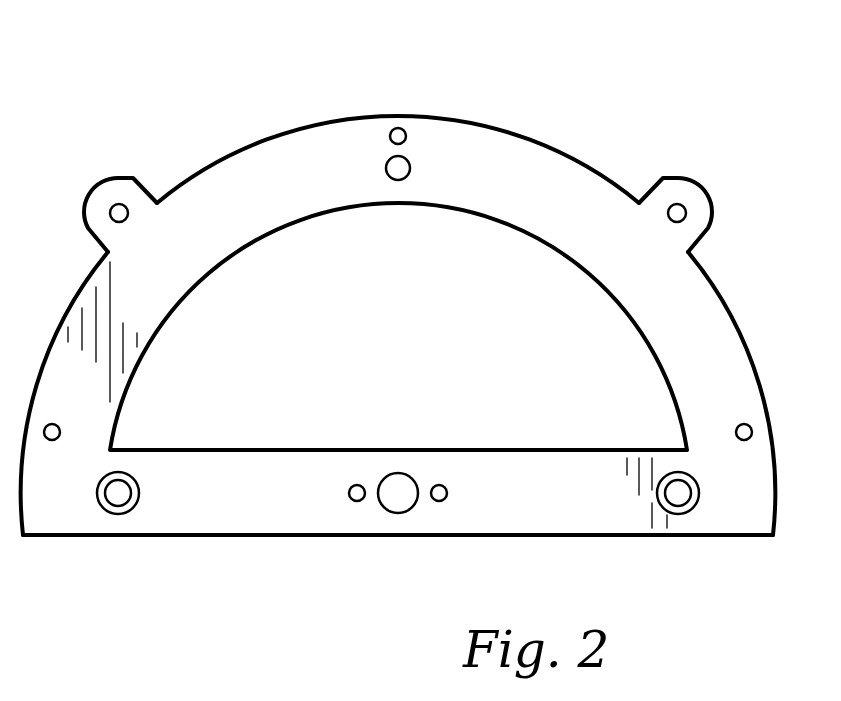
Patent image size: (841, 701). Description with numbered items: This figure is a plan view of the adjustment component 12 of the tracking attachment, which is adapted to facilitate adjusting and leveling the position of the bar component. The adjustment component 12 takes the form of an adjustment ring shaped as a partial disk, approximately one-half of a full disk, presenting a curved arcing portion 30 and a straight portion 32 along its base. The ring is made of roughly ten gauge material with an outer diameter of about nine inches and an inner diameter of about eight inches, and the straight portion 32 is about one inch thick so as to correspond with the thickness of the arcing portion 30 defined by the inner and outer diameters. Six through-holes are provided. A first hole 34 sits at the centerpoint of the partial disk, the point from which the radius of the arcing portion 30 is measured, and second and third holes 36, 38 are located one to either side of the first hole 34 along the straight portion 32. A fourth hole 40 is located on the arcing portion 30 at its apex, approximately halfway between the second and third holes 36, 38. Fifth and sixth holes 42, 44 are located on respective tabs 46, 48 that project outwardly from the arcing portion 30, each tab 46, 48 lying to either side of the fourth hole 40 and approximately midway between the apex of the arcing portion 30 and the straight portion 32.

The adjustment component 12 is at (396, 307).
The arcing portion 30 is at (237, 170).
The straight portion 32 is at (562, 522).
The first hole 34 is at (388, 500).
The second hole 36 is at (113, 497).
The third hole 38 is at (678, 498).
The fourth hole 40 is at (403, 163).
The fifth hole 42 is at (119, 205).
The sixth hole 44 is at (688, 212).
The tab 46 is at (97, 227).
The tab 48 is at (698, 228).